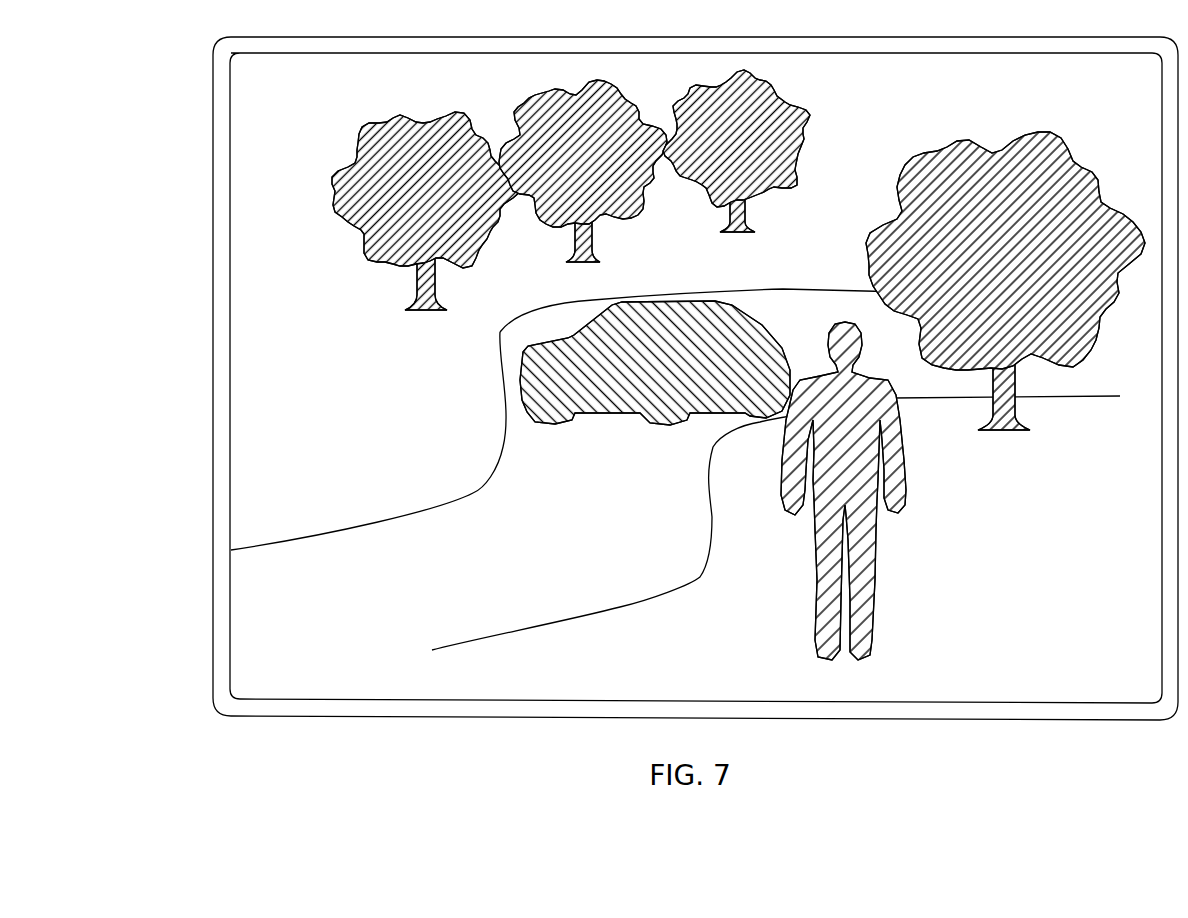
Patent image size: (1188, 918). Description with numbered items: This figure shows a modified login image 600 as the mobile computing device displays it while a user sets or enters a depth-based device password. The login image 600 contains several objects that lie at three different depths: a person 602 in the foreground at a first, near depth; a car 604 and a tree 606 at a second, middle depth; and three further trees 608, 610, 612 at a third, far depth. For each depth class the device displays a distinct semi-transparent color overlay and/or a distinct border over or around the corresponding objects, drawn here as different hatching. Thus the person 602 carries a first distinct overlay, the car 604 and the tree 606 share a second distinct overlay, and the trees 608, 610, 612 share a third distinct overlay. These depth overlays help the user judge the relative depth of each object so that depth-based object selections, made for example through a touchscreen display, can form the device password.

The login image 600 is at (203, 68).
The person 602 is at (872, 573).
The car 604 is at (522, 377).
The tree 606 is at (907, 170).
The tree 608 is at (338, 161).
The tree 610 is at (497, 120).
The tree 612 is at (660, 109).